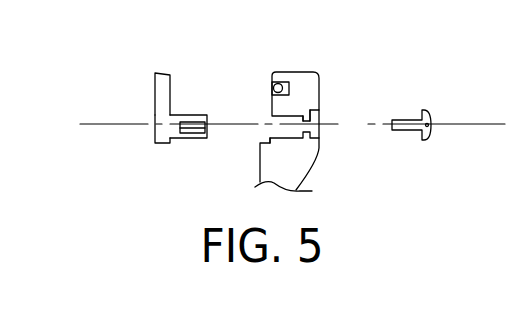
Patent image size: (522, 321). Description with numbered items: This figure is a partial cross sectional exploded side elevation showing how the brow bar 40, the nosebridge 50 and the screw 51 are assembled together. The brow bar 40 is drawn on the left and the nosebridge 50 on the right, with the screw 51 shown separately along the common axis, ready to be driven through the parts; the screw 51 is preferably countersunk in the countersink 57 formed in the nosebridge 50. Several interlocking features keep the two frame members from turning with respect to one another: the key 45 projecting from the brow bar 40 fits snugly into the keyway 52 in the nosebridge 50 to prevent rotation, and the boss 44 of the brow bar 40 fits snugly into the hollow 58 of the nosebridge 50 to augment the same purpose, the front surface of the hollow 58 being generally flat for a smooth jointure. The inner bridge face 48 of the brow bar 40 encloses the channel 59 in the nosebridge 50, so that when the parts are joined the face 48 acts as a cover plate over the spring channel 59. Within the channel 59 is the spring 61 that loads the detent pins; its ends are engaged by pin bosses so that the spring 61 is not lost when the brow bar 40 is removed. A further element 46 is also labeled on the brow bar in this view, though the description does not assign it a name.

The brow bar 40 is at (160, 107).
The boss 44 is at (154, 141).
The key 45 is at (190, 112).
The contact element 46 is at (192, 134).
The inner bridge face 48 is at (171, 86).
The nosebridge 50 is at (295, 125).
The screw 51 is at (404, 120).
The keyway 52 is at (267, 116).
The countersink 57 is at (324, 112).
The hollow 58 is at (264, 139).
The channel 59 is at (291, 87).
The spring 61 is at (273, 84).